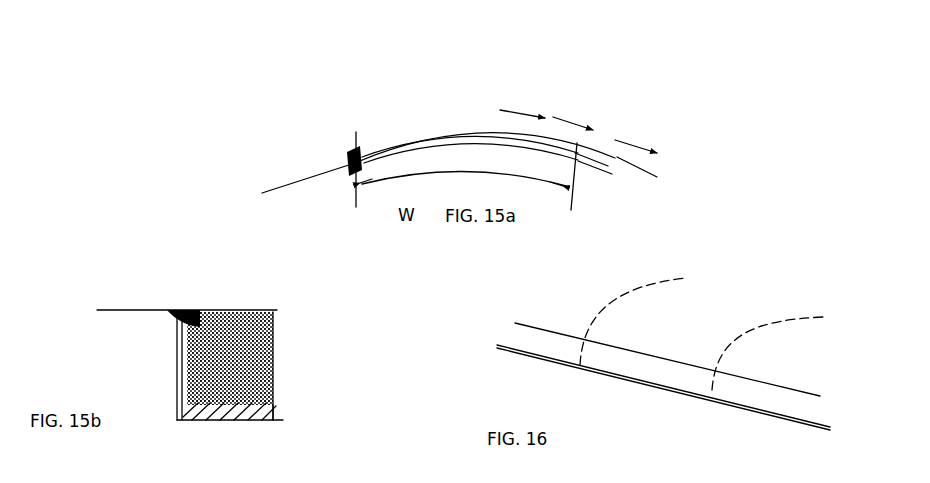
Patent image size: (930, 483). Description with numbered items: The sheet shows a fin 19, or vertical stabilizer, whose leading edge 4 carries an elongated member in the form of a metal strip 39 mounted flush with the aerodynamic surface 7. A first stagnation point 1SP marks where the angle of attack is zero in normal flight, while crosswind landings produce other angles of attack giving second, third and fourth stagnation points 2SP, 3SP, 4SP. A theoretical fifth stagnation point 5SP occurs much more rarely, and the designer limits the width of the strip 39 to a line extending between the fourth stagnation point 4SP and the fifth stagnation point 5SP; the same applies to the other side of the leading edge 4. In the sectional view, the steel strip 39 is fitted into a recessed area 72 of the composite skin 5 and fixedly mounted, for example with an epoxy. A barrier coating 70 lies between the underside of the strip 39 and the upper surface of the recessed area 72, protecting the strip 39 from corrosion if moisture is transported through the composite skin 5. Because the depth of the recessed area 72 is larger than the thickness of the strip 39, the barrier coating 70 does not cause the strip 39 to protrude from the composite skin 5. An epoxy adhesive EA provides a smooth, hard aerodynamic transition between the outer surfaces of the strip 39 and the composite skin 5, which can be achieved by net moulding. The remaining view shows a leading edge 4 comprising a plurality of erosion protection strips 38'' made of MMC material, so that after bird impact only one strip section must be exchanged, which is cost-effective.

In FIG. 15a, the leading edge 4 is at (367, 76).
In FIG. 15b, the leading edge 4 is at (92, 260).
In FIG. 16, the leading edge 4 is at (636, 364).
In FIG. 15a, the composite skin 5 is at (306, 170).
In FIG. 15b, the composite skin 5 is at (187, 365).
In FIG. 15a, the aerodynamic surface 7 is at (328, 110).
In FIG. 15a, the fin 19 is at (308, 205).
In FIG. 15a, the metal strip 39 is at (586, 168).
In FIG. 15b, the metal strip 39 is at (272, 364).
In FIG. 15a, the barrier coating 70 is at (383, 154).
In FIG. 15b, the barrier coating 70 is at (180, 408).
In FIG. 15a, the recessed area 72 is at (578, 178).
In FIG. 15b, the recessed area 72 is at (280, 416).
In FIG. 15a, the first stagnation point 1SP is at (462, 64).
In FIG. 15a, the second stagnation point 2SP is at (507, 104).
In FIG. 15a, the third stagnation point 3SP is at (533, 104).
In FIG. 15a, the fourth stagnation point 4SP is at (568, 104).
In FIG. 15a, the fifth stagnation point 5SP is at (600, 126).
In FIG. 15b, the epoxy adhesive EA is at (193, 298).
In FIG. 16, the erosion protection strips 38'' is at (663, 398).